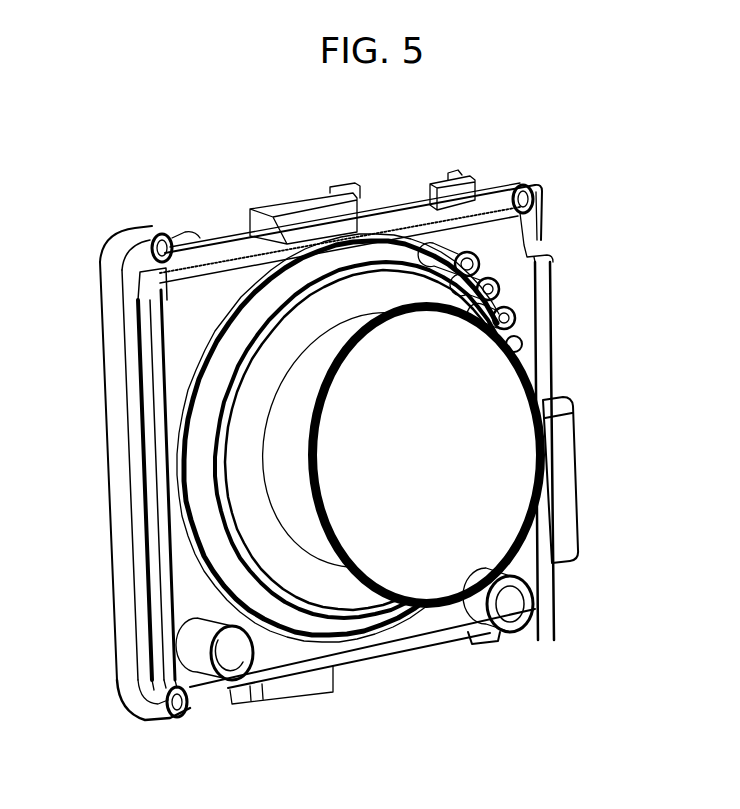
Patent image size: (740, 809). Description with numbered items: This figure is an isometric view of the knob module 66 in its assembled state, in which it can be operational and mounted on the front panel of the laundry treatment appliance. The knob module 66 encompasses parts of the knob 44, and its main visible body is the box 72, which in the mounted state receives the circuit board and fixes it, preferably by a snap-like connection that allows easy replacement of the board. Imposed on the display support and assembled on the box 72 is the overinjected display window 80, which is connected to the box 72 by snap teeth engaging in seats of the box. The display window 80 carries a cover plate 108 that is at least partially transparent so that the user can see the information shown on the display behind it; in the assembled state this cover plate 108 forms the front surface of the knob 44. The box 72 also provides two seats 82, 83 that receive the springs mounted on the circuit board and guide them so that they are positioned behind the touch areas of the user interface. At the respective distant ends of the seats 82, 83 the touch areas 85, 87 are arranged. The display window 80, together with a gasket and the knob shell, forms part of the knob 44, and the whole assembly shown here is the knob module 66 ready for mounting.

The knob module 66 is at (236, 160).
The box 72 is at (510, 246).
The display window 80 is at (495, 381).
The cover plate 108 is at (475, 443).
The knob 44 is at (505, 498).
The touch area 85 is at (230, 645).
The seat 82 is at (223, 672).
The touch area 87 is at (515, 587).
The seat 83 is at (518, 640).